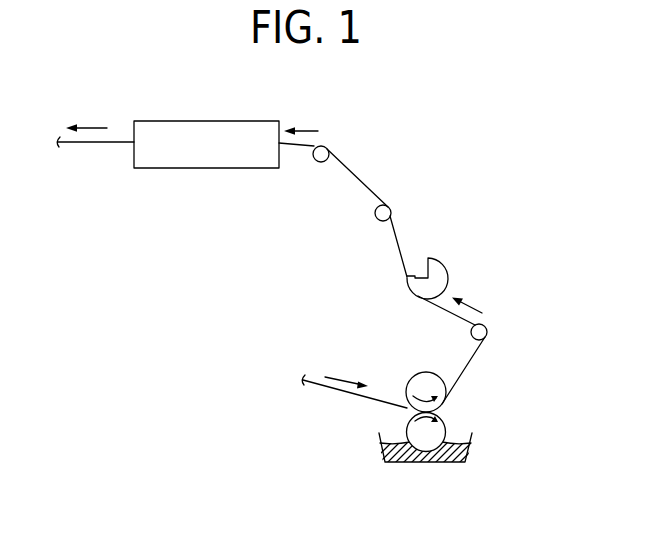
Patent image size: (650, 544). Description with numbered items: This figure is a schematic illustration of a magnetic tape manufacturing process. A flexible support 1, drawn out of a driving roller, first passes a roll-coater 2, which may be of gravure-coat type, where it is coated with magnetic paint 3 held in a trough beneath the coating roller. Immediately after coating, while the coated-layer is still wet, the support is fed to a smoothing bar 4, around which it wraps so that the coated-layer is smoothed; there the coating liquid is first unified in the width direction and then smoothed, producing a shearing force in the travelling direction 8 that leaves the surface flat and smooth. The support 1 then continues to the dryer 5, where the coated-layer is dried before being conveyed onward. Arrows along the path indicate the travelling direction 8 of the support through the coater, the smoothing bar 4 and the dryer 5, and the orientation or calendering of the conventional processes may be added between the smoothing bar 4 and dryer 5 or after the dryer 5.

The flexible support 1 is at (398, 229).
The roll-coater 2 is at (418, 385).
The magnetic paint 3 is at (470, 448).
The smoothing bar 4 is at (445, 275).
The dryer 5 is at (211, 130).
The travelling direction 8 is at (339, 416).